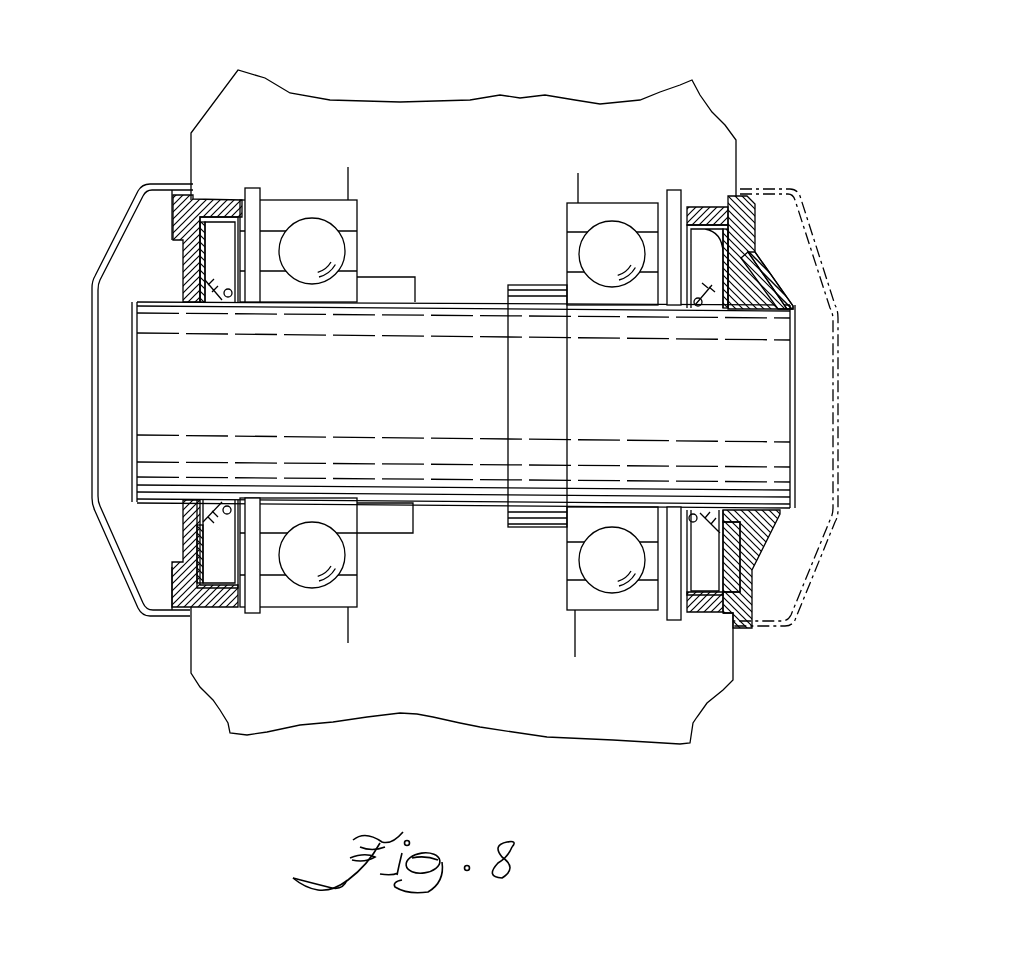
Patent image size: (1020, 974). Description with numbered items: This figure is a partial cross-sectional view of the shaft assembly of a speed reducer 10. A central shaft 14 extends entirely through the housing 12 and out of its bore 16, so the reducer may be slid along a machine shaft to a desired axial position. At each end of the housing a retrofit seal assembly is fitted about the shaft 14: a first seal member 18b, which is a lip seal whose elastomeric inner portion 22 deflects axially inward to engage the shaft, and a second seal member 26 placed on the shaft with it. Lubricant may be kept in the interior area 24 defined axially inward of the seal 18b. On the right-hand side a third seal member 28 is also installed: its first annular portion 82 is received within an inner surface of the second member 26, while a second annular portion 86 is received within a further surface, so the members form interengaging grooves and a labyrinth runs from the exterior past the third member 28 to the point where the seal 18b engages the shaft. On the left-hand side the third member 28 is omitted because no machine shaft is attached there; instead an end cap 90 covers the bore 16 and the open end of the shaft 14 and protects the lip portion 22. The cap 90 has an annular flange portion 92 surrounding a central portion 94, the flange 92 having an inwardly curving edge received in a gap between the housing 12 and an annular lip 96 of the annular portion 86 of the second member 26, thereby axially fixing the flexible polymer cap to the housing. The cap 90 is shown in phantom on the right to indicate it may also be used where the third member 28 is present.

The speed reducer 10 is at (561, 78).
The housing 12 is at (213, 108).
The shaft 14 is at (448, 505).
The bore 16 is at (234, 199).
The first seal member 18b is at (728, 207).
The elastomeric inner portion 22 is at (207, 520).
The interior area 24 is at (707, 562).
The second seal member 26 is at (173, 570).
The third seal member 28 is at (772, 275).
The first annular portion 82 is at (733, 309).
The second annular portion 86 is at (177, 220).
The end cap 90 is at (462, 405).
The annular flange portion 92 is at (158, 620).
The central portion 94 is at (90, 452).
The annular lip 96 is at (170, 190).